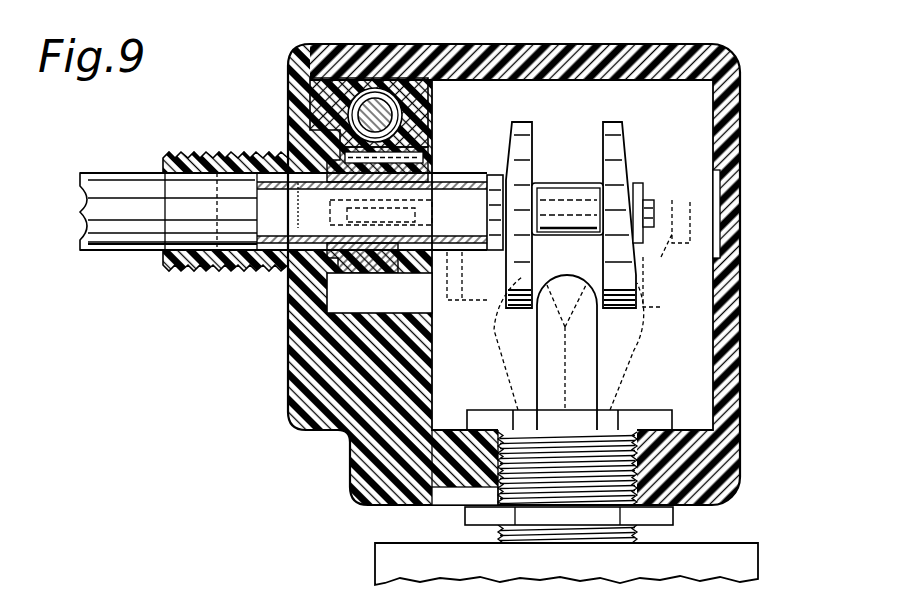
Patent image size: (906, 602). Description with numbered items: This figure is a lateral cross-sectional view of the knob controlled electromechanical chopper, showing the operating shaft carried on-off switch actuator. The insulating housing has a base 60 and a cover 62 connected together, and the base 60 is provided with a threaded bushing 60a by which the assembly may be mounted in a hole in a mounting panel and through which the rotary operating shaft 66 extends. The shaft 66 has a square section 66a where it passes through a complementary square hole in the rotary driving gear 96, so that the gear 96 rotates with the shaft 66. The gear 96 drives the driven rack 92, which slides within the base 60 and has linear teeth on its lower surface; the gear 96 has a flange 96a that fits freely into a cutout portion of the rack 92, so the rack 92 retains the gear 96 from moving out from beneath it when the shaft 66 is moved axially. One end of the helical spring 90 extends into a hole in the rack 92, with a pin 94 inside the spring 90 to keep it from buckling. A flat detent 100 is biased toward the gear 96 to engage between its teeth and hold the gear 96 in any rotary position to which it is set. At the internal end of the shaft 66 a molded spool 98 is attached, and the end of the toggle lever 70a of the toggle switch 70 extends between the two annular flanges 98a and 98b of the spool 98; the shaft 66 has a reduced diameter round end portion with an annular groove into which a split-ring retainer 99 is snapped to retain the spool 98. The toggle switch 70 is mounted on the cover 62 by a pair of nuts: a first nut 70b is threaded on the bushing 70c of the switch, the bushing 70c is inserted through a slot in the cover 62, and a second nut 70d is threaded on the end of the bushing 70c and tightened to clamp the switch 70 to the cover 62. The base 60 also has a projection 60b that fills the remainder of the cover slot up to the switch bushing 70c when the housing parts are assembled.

The base 60 is at (306, 52).
The threaded bushing 60a is at (200, 155).
The projection 60b is at (463, 448).
The cover 62 is at (584, 50).
The rotary operating shaft 66 is at (120, 186).
The square section 66a is at (302, 196).
The toggle switch 70 is at (760, 560).
The toggle lever 70a is at (587, 338).
The first nut 70b is at (676, 517).
The bushing 70c is at (742, 450).
The second nut 70d is at (652, 410).
The helical spring 90 is at (365, 78).
The driven rack 92 is at (398, 84).
The pin 94 is at (385, 118).
The rotary driving gear 96 is at (395, 174).
The flange 96a is at (340, 280).
The molded spool 98 is at (565, 183).
The annular flange 98a is at (514, 132).
The annular flange 98b is at (626, 126).
The split-ring retainer 99 is at (640, 187).
The flat detent 100 is at (400, 215).